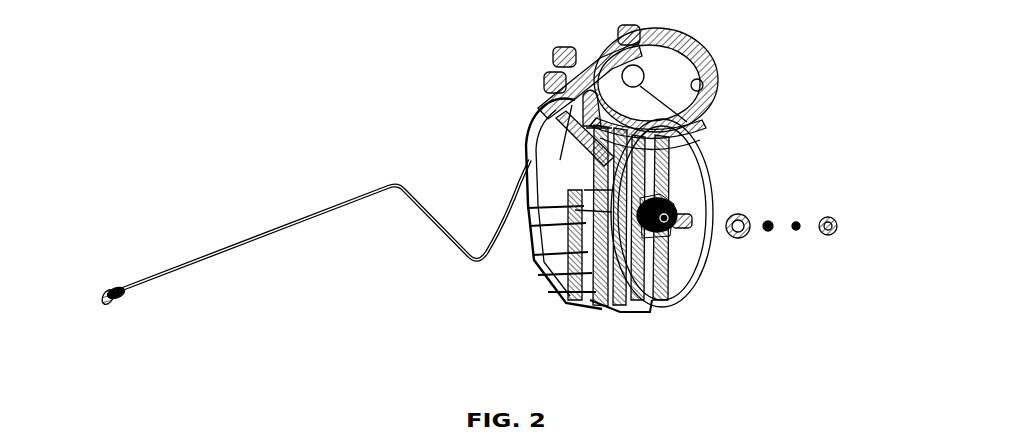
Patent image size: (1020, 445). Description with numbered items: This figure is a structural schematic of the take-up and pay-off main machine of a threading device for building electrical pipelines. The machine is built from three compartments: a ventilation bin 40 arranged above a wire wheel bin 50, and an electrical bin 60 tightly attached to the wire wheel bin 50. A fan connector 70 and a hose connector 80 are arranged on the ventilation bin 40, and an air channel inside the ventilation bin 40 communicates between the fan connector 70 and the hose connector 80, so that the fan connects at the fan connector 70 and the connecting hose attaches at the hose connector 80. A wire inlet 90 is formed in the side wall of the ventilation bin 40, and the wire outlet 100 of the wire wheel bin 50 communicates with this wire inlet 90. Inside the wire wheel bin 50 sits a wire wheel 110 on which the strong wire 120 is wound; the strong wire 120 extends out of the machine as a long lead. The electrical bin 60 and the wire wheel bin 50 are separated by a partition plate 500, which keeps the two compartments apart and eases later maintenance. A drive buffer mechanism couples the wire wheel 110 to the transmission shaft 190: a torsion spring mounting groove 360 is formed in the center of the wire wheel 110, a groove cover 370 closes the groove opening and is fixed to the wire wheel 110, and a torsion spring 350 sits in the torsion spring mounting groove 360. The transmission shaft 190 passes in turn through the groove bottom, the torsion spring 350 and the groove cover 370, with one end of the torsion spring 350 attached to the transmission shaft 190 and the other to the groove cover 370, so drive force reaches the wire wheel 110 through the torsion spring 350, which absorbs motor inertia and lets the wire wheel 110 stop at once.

The ventilation bin 40 is at (603, 51).
The wire wheel bin 50 is at (596, 252).
The electrical bin 60 is at (557, 240).
The fan connector 70 is at (660, 70).
The hose connector 80 is at (541, 106).
The wire inlet 90 is at (628, 138).
The wire outlet 100 is at (600, 160).
The wire wheel 110 is at (692, 252).
The strong wire 120 is at (446, 240).
The transmission shaft 190 is at (684, 227).
The torsion spring 350 is at (690, 225).
The torsion spring mounting groove 360 is at (669, 234).
The groove cover 370 is at (742, 231).
The partition plate 500 is at (618, 262).